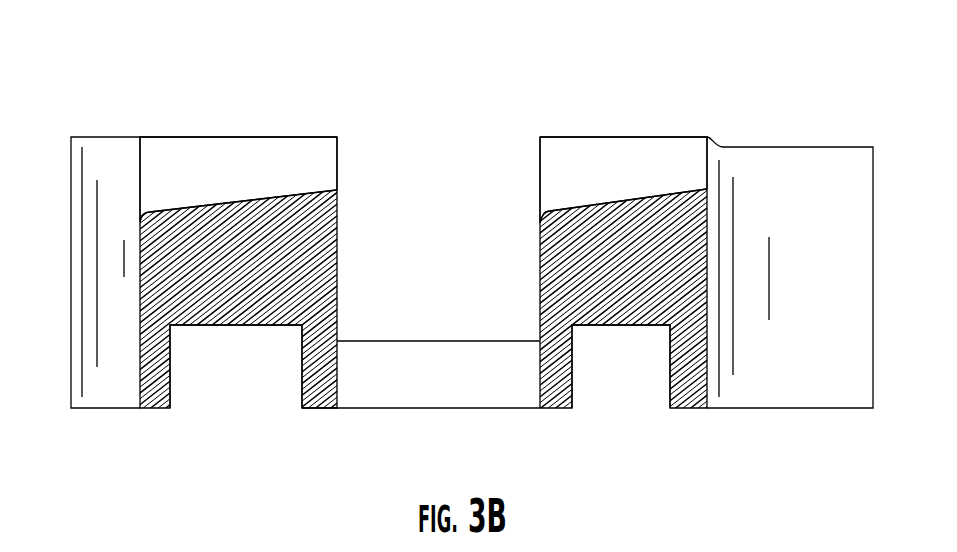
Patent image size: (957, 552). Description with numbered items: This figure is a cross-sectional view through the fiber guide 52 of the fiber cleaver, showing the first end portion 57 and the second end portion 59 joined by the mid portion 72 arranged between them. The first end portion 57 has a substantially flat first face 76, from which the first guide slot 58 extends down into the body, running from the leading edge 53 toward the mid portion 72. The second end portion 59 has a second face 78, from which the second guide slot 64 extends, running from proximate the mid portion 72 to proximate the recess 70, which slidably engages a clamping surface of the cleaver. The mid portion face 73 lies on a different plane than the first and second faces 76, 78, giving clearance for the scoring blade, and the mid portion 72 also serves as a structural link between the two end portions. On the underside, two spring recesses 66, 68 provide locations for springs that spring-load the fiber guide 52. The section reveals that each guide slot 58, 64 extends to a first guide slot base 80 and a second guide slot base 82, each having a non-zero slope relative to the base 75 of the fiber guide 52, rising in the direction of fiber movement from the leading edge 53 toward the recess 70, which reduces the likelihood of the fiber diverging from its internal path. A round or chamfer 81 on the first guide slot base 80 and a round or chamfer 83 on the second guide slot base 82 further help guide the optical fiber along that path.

The fiber guide 52 is at (478, 269).
The leading edge 53 is at (72, 216).
The first end portion 57 is at (268, 137).
The first guide slot 58 is at (227, 173).
The second end portion 59 is at (617, 238).
The second guide slot 64 is at (668, 137).
The spring recess 66 is at (170, 347).
The spring recess 68 is at (572, 358).
The recess 70 is at (773, 188).
The mid portion 72 is at (438, 356).
The mid portion face 73 is at (423, 341).
The base 75 is at (312, 410).
The first face 76 is at (173, 137).
The second face 78 is at (633, 157).
The first guide slot base 80 is at (267, 192).
The round or chamfer 81 is at (140, 216).
The second guide slot base 82 is at (569, 210).
The round or chamfer 83 is at (540, 218).